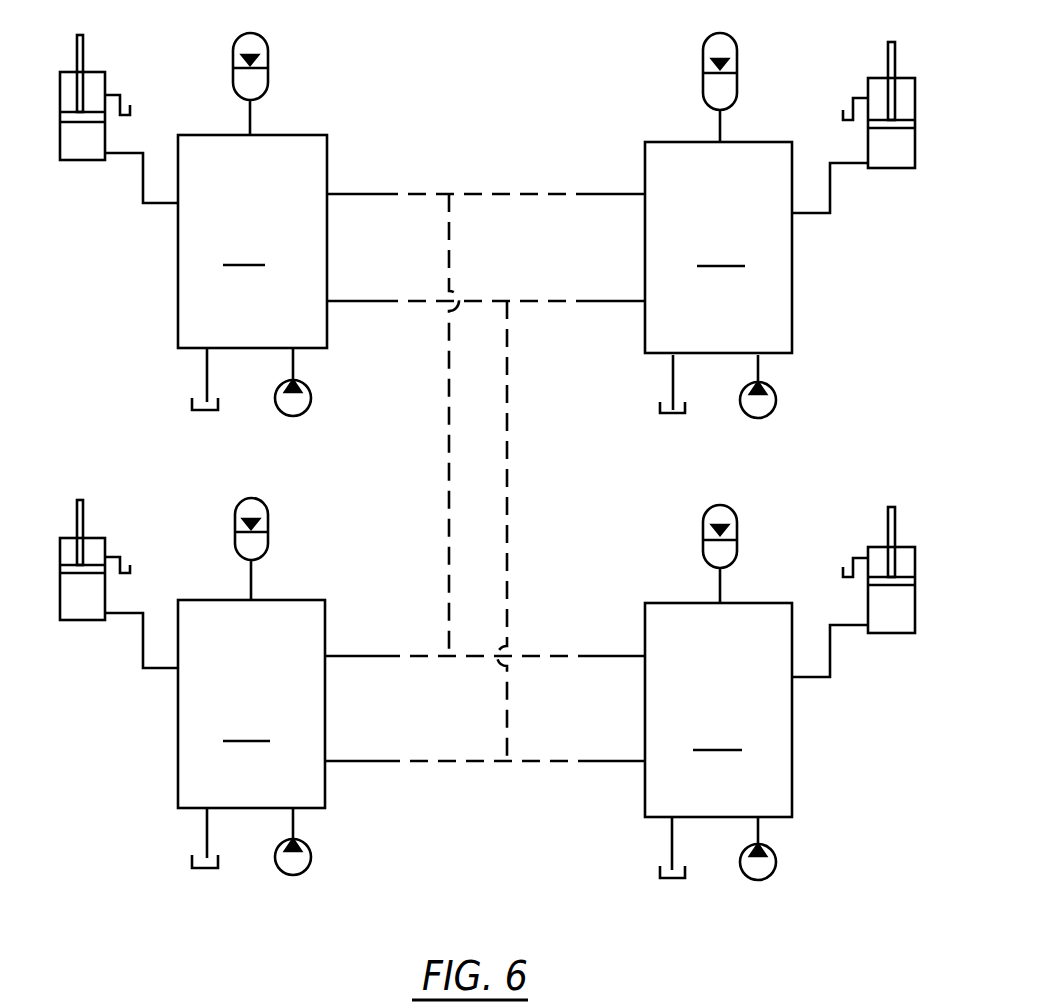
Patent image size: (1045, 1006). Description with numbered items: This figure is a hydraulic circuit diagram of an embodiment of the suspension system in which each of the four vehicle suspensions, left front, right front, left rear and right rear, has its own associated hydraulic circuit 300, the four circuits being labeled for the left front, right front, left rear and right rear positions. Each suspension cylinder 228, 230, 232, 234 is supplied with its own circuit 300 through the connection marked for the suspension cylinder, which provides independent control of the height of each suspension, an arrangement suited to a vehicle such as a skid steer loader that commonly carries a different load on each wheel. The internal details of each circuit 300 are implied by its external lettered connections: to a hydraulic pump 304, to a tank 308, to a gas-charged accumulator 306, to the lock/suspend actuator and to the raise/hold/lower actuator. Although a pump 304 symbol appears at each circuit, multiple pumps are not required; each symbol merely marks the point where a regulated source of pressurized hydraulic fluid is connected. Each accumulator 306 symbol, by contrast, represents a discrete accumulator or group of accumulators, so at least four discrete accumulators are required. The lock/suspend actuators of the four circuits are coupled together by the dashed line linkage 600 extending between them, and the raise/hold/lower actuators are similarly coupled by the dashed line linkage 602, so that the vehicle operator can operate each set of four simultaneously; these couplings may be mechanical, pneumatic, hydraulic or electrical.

The cylinder 228 is at (105, 88).
The cylinder 230 is at (105, 550).
The cylinder 232 is at (868, 93).
The cylinder 234 is at (868, 553).
The hydraulic circuit 300 is at (278, 226).
The hydraulic pump 304 is at (311, 405).
The gas-charged accumulator 306 is at (268, 53).
The tank 308 is at (192, 407).
The dashed line linkage 600 is at (449, 492).
The dashed line linkage 602 is at (507, 486).